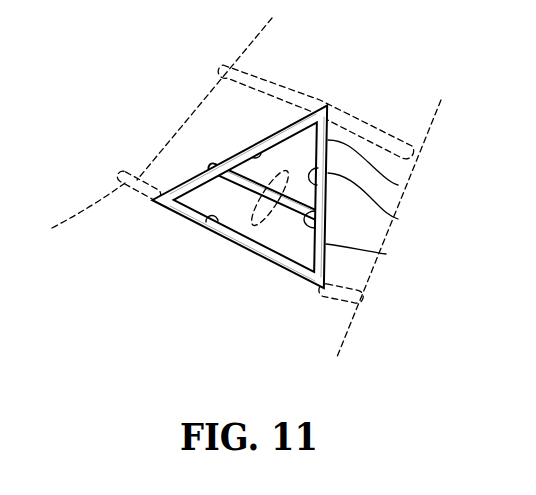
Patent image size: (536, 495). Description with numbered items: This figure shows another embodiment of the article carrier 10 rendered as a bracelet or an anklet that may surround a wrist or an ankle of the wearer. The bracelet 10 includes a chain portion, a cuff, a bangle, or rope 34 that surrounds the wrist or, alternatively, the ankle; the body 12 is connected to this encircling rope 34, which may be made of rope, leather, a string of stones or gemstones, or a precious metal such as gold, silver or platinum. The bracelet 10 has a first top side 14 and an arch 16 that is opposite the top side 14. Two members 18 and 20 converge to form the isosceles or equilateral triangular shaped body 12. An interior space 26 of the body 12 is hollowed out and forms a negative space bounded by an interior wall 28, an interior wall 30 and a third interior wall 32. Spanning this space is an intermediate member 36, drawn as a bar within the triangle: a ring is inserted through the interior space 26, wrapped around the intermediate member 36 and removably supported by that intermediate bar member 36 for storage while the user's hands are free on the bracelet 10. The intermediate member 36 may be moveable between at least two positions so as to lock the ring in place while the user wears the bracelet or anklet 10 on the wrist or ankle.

The article carrier 10 is at (271, 159).
The body 12 is at (398, 185).
The first top side 14 is at (226, 237).
The arch 16 is at (328, 104).
The member 18 is at (180, 184).
The member 20 is at (325, 257).
The interior space 26 is at (211, 165).
The interior wall 28 is at (256, 156).
The interior wall 30 is at (363, 204).
The third interior wall 32 is at (208, 220).
The rope 34 is at (273, 79).
The intermediate member 36 is at (369, 258).